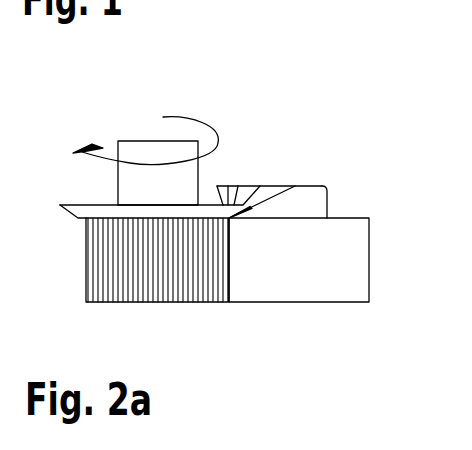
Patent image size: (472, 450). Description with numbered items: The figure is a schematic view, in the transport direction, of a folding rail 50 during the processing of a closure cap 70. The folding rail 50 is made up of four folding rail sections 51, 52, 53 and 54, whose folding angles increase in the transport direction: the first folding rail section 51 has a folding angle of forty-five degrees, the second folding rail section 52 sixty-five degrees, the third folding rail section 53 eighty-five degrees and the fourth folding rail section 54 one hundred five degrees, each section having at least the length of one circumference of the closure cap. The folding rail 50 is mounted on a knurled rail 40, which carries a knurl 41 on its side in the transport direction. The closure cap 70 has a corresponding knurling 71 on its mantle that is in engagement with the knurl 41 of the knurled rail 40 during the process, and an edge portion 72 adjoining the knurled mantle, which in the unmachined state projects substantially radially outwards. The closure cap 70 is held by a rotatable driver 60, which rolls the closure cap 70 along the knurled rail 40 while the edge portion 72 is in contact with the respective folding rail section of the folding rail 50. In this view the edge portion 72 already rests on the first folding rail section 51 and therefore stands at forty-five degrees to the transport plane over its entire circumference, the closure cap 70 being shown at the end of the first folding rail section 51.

The knurled rail 40 is at (341, 275).
The knurl 41 is at (229, 277).
The folding rail 50 is at (284, 112).
The first folding rail section 51 is at (303, 203).
The second folding rail section 52 is at (271, 188).
The third folding rail section 53 is at (247, 192).
The fourth folding rail section 54 is at (228, 186).
The rotatable driver 60 is at (123, 119).
The closure cap 70 is at (184, 324).
The knurling 71 is at (113, 240).
The edge portion 72 is at (77, 210).